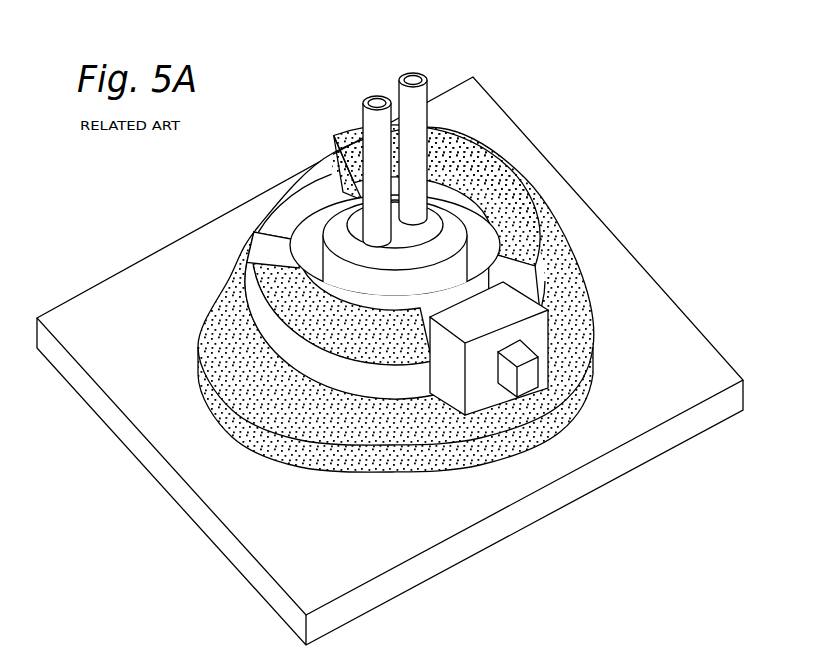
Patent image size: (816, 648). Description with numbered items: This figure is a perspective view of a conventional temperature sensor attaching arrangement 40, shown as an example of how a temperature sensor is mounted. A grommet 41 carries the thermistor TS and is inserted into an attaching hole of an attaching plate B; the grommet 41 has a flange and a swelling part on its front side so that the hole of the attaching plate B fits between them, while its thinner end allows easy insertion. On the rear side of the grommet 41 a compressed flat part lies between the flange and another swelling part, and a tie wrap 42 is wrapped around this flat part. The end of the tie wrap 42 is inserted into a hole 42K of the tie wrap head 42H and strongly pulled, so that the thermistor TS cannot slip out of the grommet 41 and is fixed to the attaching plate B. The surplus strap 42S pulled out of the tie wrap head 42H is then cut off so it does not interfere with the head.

The related art torque sensor assembly 40 is at (416, 319).
The grommet 41 is at (517, 178).
The tie wrap 42 is at (416, 319).
The hole 42K is at (580, 326).
The curved arm portion of rotor 42S is at (318, 358).
The tie wrap head 42H is at (483, 398).
The thermistor TS is at (430, 84).
The attaching plate B is at (667, 392).